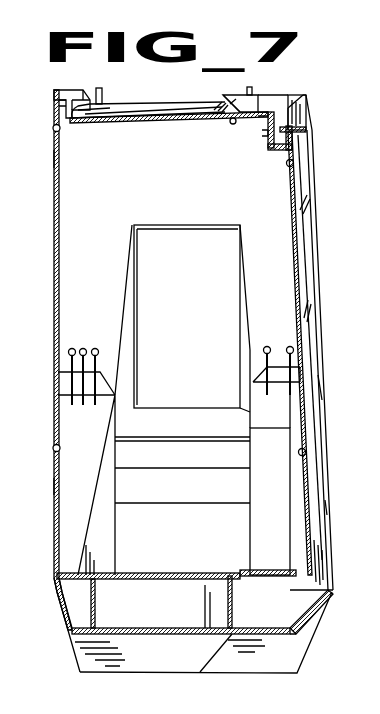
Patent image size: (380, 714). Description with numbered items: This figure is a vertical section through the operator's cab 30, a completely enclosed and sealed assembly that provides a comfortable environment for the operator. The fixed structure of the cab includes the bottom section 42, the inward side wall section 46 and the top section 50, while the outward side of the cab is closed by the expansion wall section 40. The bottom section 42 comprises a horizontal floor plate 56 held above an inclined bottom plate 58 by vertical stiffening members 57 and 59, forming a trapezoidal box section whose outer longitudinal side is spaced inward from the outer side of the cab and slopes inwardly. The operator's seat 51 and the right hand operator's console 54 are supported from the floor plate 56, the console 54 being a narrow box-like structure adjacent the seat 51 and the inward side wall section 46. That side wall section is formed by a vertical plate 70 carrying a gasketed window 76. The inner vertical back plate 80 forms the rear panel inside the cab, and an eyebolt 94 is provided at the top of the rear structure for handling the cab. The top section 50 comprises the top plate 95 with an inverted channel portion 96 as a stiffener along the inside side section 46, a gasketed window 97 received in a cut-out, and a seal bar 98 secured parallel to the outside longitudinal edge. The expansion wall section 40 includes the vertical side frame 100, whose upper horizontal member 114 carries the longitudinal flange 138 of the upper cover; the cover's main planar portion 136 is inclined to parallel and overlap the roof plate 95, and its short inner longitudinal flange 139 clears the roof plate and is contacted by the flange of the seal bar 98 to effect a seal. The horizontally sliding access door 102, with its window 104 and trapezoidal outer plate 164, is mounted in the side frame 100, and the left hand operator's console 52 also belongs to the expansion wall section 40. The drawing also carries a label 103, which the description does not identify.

The cab 30 is at (180, 651).
The expansion wall section 40 is at (324, 178).
The bottom section 42 is at (184, 676).
The inward side wall section 46 is at (52, 211).
The top section 50 is at (76, 89).
The seat 51 is at (198, 466).
The left hand operator's console 52 is at (282, 463).
The right hand operator's console 54 is at (92, 452).
The horizontal floor plate 56 is at (167, 567).
The vertical stiffening member 57 is at (96, 595).
The inclined bottom plate 58 is at (78, 633).
The vertical stiffening member 59 is at (212, 613).
The vertical plate 70 is at (56, 487).
The gasketed window 76 is at (59, 159).
The inner vertical back plate 80 is at (194, 200).
The eyebolt 94 is at (99, 97).
The top plate 95 is at (112, 105).
The inverted channel portion 96 is at (62, 101).
The window 97 is at (123, 121).
The seal bar 98 is at (262, 128).
The vertical side frame 100 is at (312, 115).
The horizontally sliding access door 102 is at (316, 137).
The frame member 103 is at (376, 495).
The window 104 is at (306, 206).
The upper horizontal member 114 is at (278, 106).
The main planar portion 136 is at (232, 95).
The longitudinal flange 138 is at (307, 104).
The inner longitudinal flange 139 is at (222, 111).
The outer plate 164 is at (321, 378).